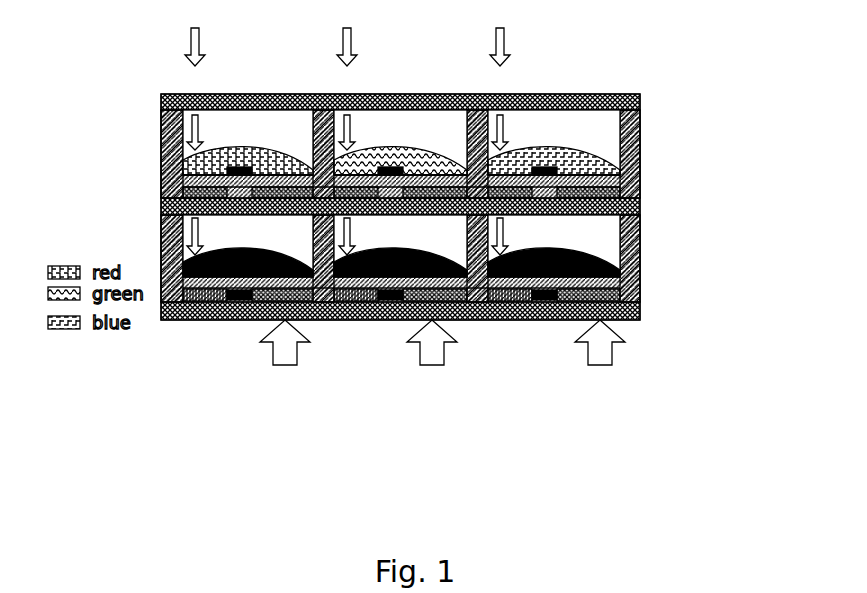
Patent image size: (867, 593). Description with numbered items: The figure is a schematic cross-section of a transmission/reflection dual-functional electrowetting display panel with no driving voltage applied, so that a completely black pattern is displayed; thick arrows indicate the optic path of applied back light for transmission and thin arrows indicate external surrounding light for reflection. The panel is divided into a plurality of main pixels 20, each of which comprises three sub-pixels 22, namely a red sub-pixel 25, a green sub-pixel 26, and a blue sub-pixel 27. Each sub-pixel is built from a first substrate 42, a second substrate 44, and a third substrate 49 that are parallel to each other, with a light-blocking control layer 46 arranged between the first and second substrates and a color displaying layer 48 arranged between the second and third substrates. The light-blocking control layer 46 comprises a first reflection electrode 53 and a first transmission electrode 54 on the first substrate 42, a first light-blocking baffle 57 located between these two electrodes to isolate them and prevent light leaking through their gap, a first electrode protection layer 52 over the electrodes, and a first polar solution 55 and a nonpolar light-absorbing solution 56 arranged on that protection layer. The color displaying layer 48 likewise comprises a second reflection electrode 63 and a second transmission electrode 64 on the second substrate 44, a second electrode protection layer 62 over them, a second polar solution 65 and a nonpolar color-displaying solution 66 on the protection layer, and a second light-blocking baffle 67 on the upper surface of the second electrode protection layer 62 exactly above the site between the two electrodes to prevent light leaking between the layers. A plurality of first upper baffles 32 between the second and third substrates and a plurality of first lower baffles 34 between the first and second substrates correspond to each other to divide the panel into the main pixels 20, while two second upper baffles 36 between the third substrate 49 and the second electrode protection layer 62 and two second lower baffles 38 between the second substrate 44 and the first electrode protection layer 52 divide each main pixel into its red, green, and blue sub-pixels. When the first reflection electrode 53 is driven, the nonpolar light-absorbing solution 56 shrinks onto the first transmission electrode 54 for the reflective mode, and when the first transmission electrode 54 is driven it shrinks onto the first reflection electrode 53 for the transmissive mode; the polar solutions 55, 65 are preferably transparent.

The main pixel 20 is at (126, 40).
The sub-pixel 22 is at (441, 200).
The red sub-pixel 25 is at (263, 68).
The green sub-pixel 26 is at (436, 66).
The blue sub-pixel 27 is at (578, 66).
The first upper baffle 32 is at (166, 125).
The first lower baffle 34 is at (170, 257).
The second upper baffle 36 is at (320, 98).
The second lower baffle 38 is at (326, 320).
The first substrate 42 is at (425, 292).
The second substrate 44 is at (606, 208).
The light-blocking control layer 46 is at (425, 292).
The color displaying layer 48 is at (420, 113).
The third substrate 49 is at (648, 97).
The first electrode protection layer 52 is at (575, 272).
The first reflection electrode 53 is at (620, 318).
The first transmission electrode 54 is at (567, 283).
The first polar solution 55 is at (592, 233).
The nonpolar light-absorbing solution 56 is at (588, 255).
The first light-blocking baffle 57 is at (560, 296).
The second electrode protection layer 62 is at (580, 185).
The second reflection electrode 63 is at (565, 174).
The second transmission electrode 64 is at (550, 194).
The second polar solution 65 is at (594, 122).
The nonpolar color-displaying solution 66 is at (588, 145).
The second light-blocking baffle 67 is at (574, 163).